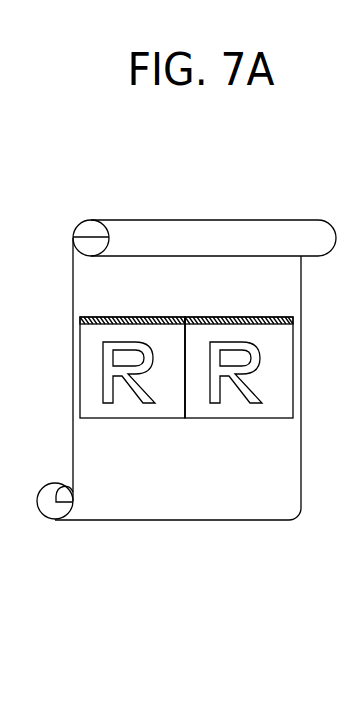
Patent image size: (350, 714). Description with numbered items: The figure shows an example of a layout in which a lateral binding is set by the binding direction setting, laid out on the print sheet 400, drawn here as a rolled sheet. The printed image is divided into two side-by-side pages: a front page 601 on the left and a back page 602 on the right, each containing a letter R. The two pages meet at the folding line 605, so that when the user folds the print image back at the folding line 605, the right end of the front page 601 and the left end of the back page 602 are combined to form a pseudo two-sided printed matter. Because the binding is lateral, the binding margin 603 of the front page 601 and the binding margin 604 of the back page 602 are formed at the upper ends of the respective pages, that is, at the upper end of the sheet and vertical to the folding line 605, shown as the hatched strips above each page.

The print sheet 400 is at (158, 218).
The front page 601 is at (125, 402).
The back page 602 is at (273, 400).
The binding margin 603 is at (122, 317).
The binding margin 604 is at (223, 317).
The folding line 605 is at (188, 402).